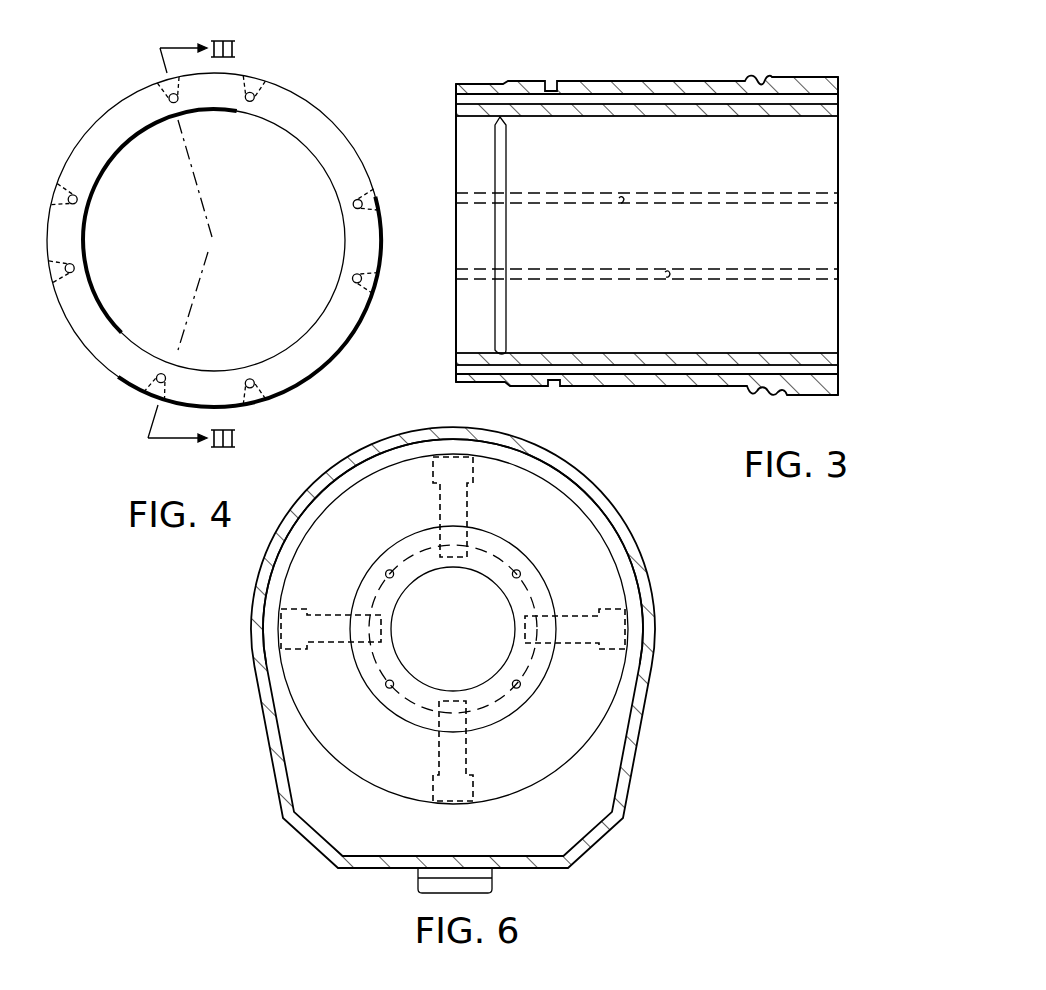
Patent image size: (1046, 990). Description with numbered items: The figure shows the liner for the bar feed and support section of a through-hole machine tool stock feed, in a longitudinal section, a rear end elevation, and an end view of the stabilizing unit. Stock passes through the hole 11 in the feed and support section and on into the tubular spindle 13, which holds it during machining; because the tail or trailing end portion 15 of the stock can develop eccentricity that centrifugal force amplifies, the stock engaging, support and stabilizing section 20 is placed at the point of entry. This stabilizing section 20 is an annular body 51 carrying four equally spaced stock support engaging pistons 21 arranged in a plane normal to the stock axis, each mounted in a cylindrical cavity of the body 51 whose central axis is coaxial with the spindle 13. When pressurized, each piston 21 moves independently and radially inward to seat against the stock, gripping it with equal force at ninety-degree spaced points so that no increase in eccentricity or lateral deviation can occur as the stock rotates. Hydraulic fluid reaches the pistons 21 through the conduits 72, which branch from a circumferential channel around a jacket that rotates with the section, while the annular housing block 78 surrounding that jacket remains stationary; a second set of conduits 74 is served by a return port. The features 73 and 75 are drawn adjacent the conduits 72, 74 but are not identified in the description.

In FIG. 6, the hole 11 is at (468, 643).
In FIG. 6, the tubular spindle 13 is at (380, 662).
In FIG. 6, the tail or trailing end portion 15 is at (587, 542).
In FIG. 6, the stock engaging, support and stabilizing section 20 is at (648, 711).
In FIG. 6, the stock support engaging pistons 21 is at (473, 523).
In FIG. 6, the body 51 is at (573, 757).
In FIG. 3, the conduits 72 is at (672, 104).
In FIG. 4, the conduits 72 is at (173, 104).
In FIG. 3, the countersunk recess 73 is at (621, 91).
In FIG. 4, the countersunk recess 73 is at (142, 94).
In FIG. 3, the radial passage 74 is at (652, 194).
In FIG. 4, the radial passage 74 is at (256, 108).
In FIG. 3, the countersunk recess 75 is at (625, 203).
In FIG. 4, the countersunk recess 75 is at (269, 98).
In FIG. 6, the annular housing block 78 is at (568, 478).